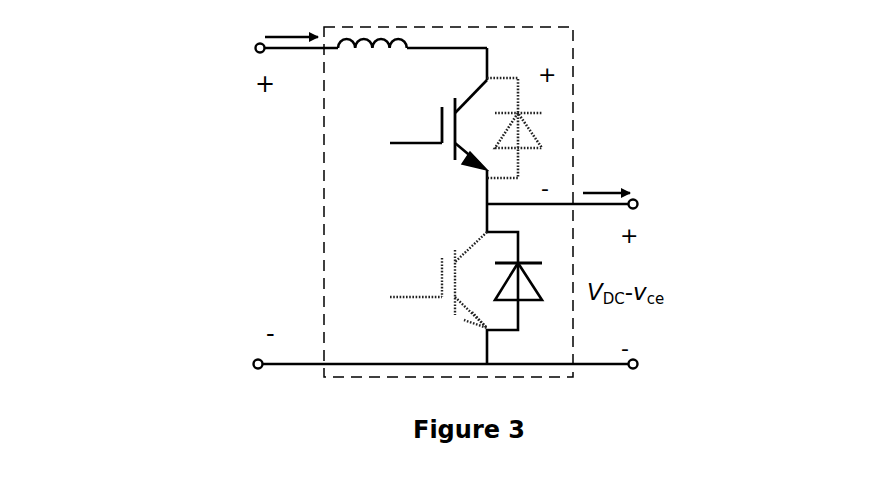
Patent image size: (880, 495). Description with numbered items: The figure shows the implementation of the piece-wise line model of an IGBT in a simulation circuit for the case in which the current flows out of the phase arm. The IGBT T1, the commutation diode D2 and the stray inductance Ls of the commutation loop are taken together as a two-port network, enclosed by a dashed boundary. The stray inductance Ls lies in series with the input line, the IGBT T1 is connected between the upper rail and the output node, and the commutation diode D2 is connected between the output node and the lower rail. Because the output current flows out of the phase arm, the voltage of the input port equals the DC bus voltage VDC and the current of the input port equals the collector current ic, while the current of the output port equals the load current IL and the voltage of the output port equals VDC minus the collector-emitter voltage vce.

The IGBT T1 is at (466, 128).
The commutation diode D2 is at (466, 280).
The stray inductance Ls is at (372, 61).
The collector current ic is at (291, 21).
The load current IL is at (606, 179).
The collector-emitter voltage vce is at (549, 134).
The DC bus voltage VDC is at (257, 216).